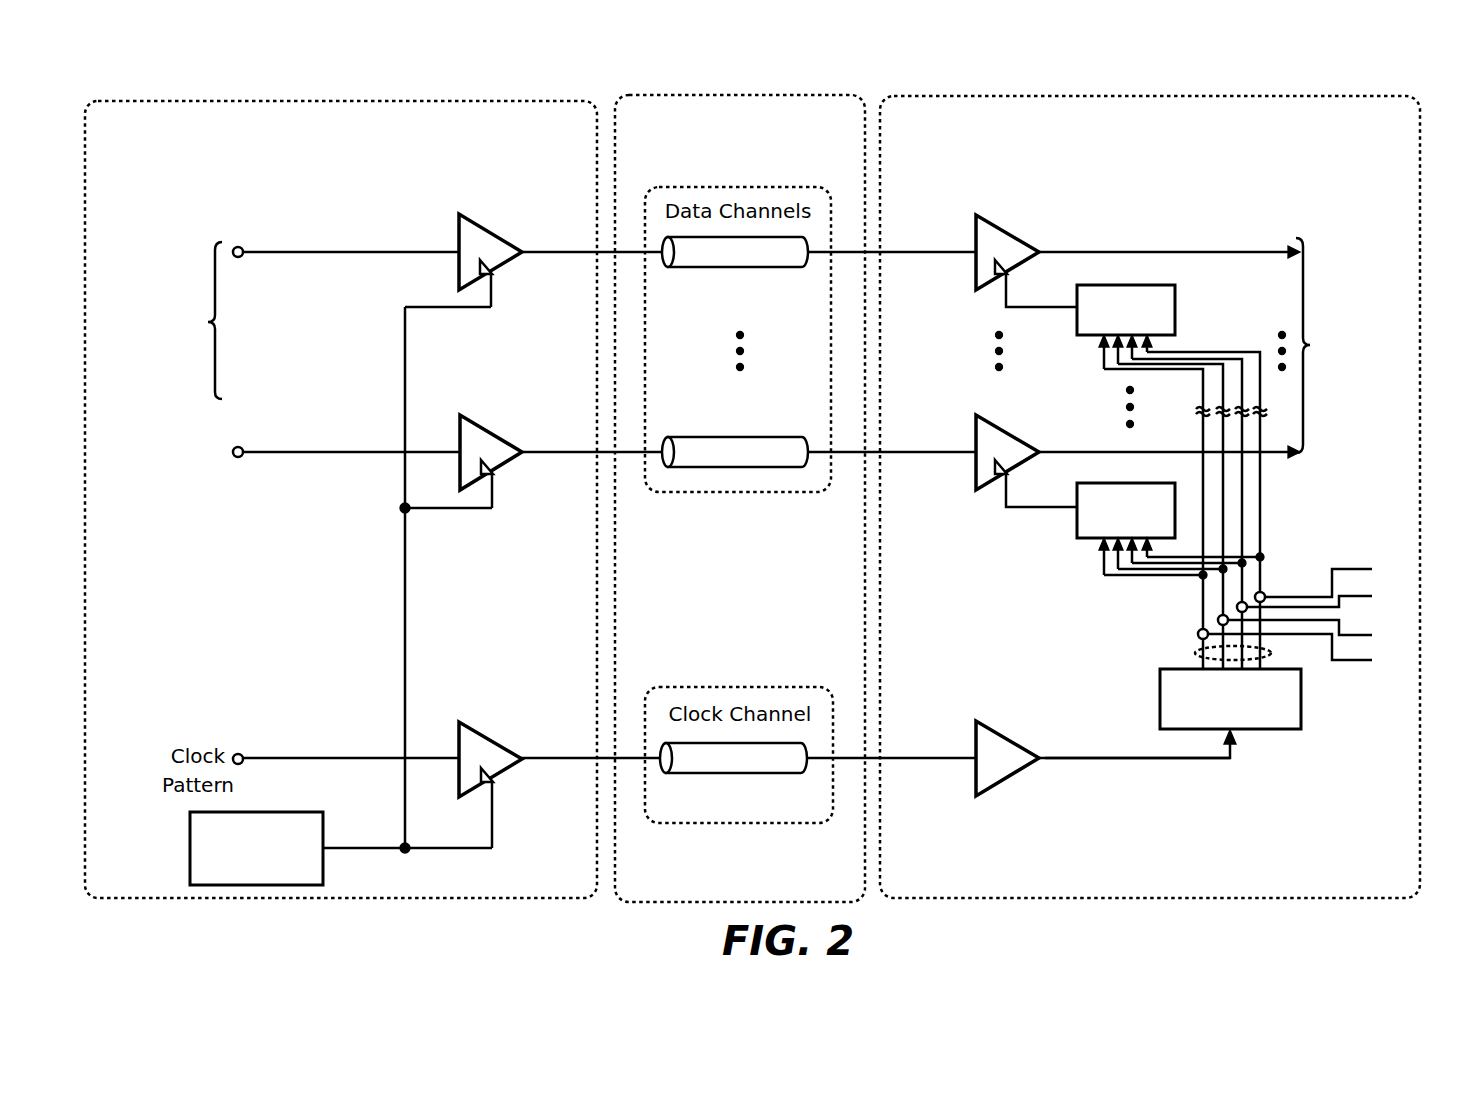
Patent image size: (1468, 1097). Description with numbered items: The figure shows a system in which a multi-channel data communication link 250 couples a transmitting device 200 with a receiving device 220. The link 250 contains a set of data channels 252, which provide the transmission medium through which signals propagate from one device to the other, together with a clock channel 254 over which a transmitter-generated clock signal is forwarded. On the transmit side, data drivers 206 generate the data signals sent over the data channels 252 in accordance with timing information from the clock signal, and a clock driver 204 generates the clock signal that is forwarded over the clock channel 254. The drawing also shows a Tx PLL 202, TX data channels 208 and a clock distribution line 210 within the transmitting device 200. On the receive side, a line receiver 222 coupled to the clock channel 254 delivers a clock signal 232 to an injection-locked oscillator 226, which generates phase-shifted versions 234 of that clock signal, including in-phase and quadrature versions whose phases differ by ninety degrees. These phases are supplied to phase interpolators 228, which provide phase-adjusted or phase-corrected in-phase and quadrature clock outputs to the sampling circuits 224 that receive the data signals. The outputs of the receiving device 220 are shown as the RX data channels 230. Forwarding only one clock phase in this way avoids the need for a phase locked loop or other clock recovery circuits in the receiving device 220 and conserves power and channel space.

The transmitting device 200 is at (152, 86).
The Tx PLL 202 is at (341, 848).
The clock driver 204 is at (486, 730).
The data drivers 206 is at (480, 222).
The TX data channels 208 is at (156, 320).
The clock distribution line 210 is at (403, 592).
The receiving device 220 is at (1378, 85).
The line receiver 222 is at (976, 746).
The sampling circuits 224 is at (978, 440).
The injection-locked oscillator 226 is at (1230, 699).
The phase interpolators 228 is at (1126, 430).
The RX data channels 230 is at (1353, 345).
The clock signal 232 is at (1106, 762).
The phase-shifted versions of the clock signal 234 is at (1200, 655).
The data communication link 250 is at (684, 96).
The data channels 252 is at (735, 353).
The clock channel 254 is at (733, 758).